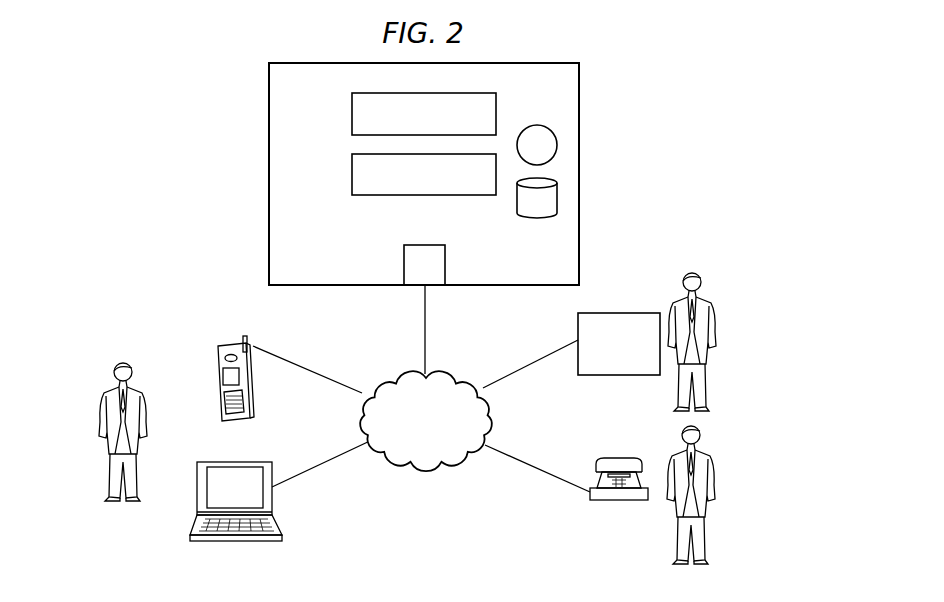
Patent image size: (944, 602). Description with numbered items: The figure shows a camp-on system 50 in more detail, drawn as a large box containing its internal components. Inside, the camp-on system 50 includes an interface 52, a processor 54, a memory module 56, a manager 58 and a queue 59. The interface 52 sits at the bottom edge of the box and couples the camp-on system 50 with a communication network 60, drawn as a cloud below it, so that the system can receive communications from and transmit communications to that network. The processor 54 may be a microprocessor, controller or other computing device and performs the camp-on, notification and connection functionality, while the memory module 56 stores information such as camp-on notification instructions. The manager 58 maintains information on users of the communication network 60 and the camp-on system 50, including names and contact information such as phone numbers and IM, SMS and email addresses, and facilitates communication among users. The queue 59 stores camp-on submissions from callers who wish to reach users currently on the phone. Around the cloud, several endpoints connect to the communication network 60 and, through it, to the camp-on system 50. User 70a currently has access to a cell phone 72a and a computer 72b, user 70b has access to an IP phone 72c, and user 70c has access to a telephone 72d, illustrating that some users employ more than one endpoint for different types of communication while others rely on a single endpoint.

The camp-on system 50 is at (580, 176).
The interface 52 is at (404, 263).
The processor 54 is at (536, 125).
The memory module 56 is at (540, 218).
The manager 58 is at (351, 173).
The queue 59 is at (351, 113).
The communication network 60 is at (438, 433).
The user 70a is at (101, 401).
The user 70b is at (713, 318).
The user 70c is at (712, 470).
The cell phone endpoint 72a is at (218, 385).
The computer endpoint 72b is at (190, 535).
The IP phone endpoint 72c is at (620, 313).
The telephone endpoint 72d is at (622, 500).